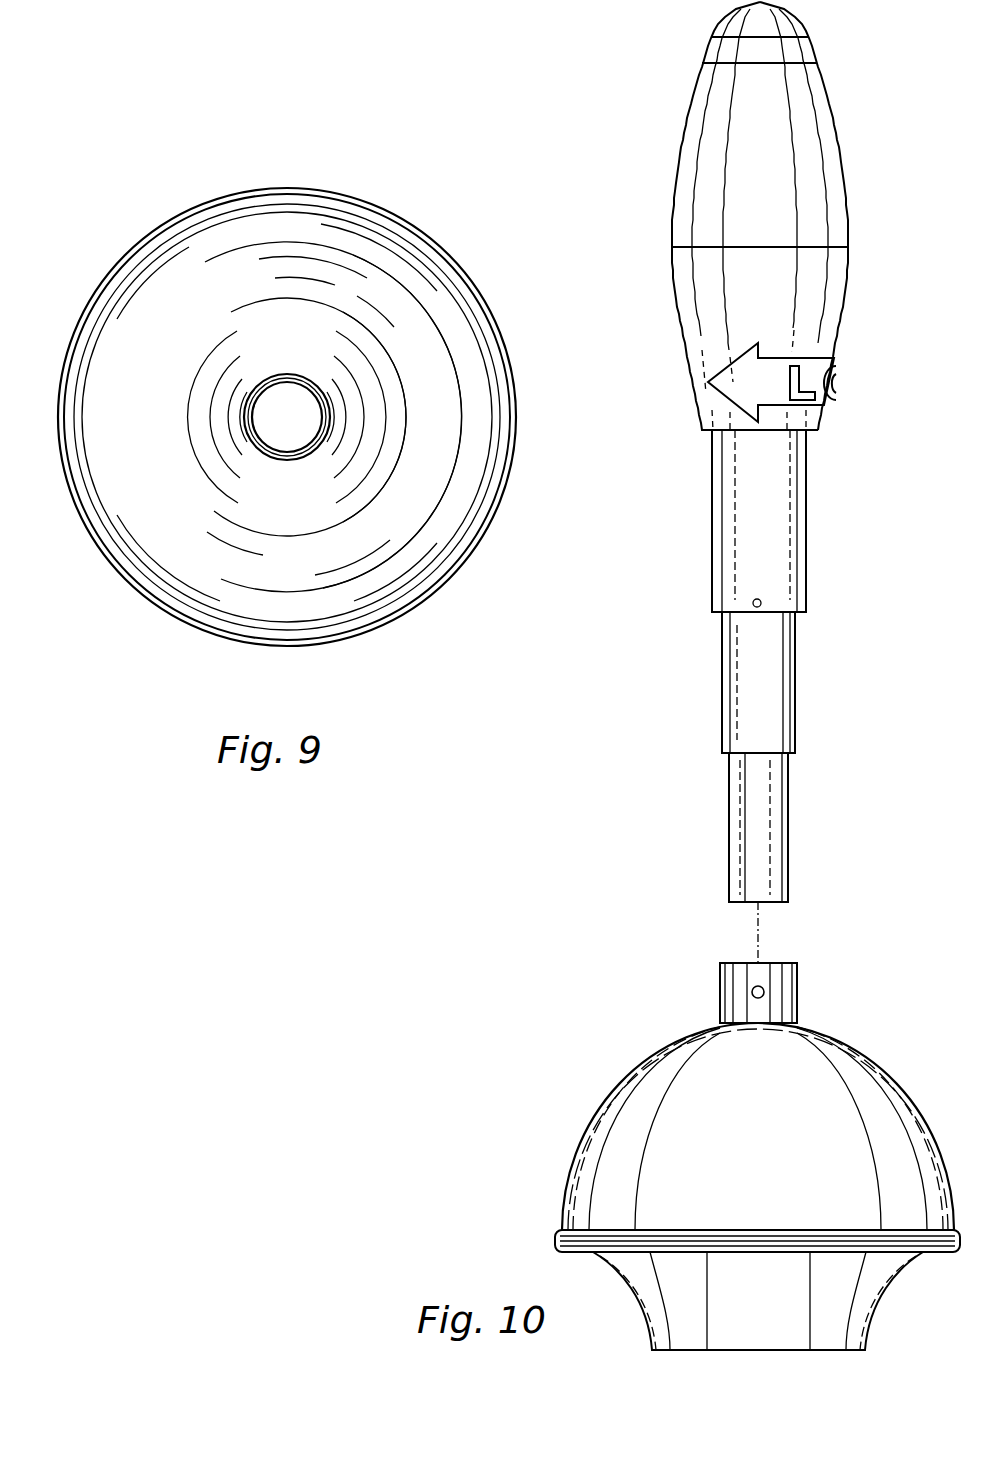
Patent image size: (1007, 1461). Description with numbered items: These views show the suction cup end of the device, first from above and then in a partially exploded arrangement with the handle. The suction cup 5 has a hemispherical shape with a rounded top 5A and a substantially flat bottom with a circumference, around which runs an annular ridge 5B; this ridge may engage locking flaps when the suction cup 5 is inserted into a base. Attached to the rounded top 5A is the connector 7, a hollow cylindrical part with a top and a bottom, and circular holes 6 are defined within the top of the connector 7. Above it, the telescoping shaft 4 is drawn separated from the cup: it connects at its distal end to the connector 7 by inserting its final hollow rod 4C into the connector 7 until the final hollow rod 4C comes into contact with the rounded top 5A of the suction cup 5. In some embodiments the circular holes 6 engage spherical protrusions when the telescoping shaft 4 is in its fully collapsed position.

In FIG. 10, the telescoping shaft 4 is at (717, 482).
In FIG. 10, the final hollow rod 4C is at (729, 808).
In FIG. 9, the suction cup 5 is at (108, 368).
In FIG. 10, the suction cup 5 is at (733, 1186).
In FIG. 9, the rounded top 5A is at (288, 398).
In FIG. 10, the rounded top 5A is at (739, 957).
In FIG. 10, the annular ridge 5B is at (603, 1230).
In FIG. 10, the circular holes 6 is at (760, 986).
In FIG. 10, the connector 7 is at (720, 990).